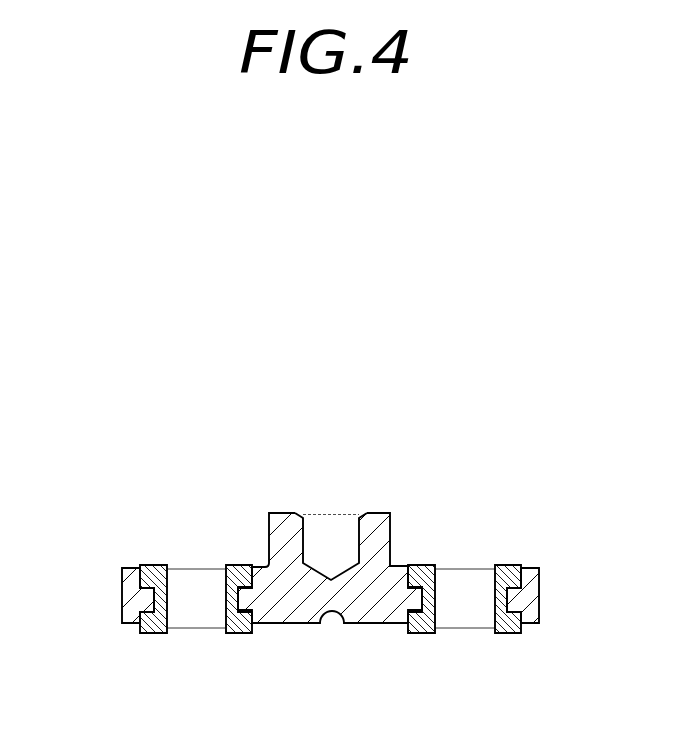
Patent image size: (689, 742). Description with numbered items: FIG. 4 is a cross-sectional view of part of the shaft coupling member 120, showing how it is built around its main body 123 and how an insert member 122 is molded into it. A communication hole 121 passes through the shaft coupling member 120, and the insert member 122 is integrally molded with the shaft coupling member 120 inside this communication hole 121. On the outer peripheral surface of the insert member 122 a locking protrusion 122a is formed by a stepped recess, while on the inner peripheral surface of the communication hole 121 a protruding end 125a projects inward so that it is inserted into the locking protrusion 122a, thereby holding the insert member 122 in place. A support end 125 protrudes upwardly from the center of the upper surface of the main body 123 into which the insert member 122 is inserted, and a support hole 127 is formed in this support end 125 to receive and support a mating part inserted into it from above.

The shaft coupling member 120 is at (149, 406).
The communication hole 121 is at (398, 625).
The insert member 122 is at (508, 565).
The locking protrusion 122a is at (435, 602).
The main body 123 is at (128, 600).
The support end 125 is at (391, 530).
The protruding end 125a is at (410, 598).
The support hole 127 is at (322, 531).